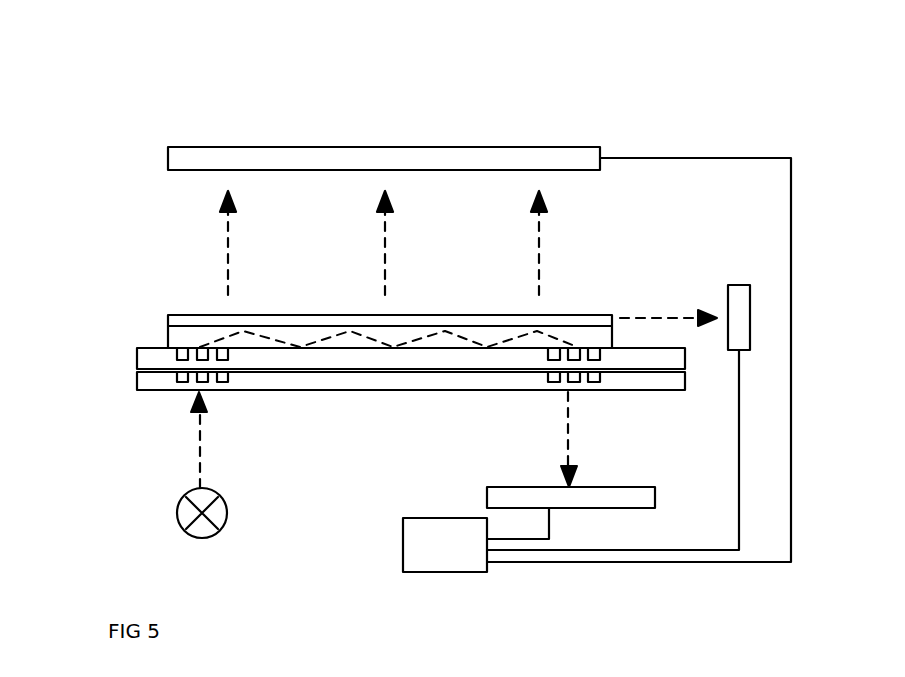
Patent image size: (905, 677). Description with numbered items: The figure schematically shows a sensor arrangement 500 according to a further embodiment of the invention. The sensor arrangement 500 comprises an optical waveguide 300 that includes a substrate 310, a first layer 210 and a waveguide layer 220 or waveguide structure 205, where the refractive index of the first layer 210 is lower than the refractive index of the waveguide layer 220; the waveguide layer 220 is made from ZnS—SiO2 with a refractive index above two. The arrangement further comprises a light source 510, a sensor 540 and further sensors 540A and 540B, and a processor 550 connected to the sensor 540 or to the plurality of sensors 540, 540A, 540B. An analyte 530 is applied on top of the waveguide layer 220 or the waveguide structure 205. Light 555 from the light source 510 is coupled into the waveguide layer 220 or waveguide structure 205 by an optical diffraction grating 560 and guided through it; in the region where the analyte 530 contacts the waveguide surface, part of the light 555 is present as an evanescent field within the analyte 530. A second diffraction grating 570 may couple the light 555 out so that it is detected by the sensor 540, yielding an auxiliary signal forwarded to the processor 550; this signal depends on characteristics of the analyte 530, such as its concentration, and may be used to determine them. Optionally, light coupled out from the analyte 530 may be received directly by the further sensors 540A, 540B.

The sensor arrangement 500 is at (608, 62).
The further sensor 540A is at (493, 147).
The further sensor 540B is at (738, 285).
The sensor 540 is at (633, 487).
The processor 550 is at (470, 572).
The analyte 530 is at (588, 315).
The waveguide structure 205 is at (166, 328).
The waveguide layer 220 is at (617, 333).
The light 555 is at (268, 335).
The optical waveguide 300 is at (80, 332).
The first layer 210 is at (132, 356).
The substrate 310 is at (132, 379).
The optical diffraction grating 560 is at (175, 395).
The second diffraction grating 570 is at (590, 380).
The light source 510 is at (228, 515).